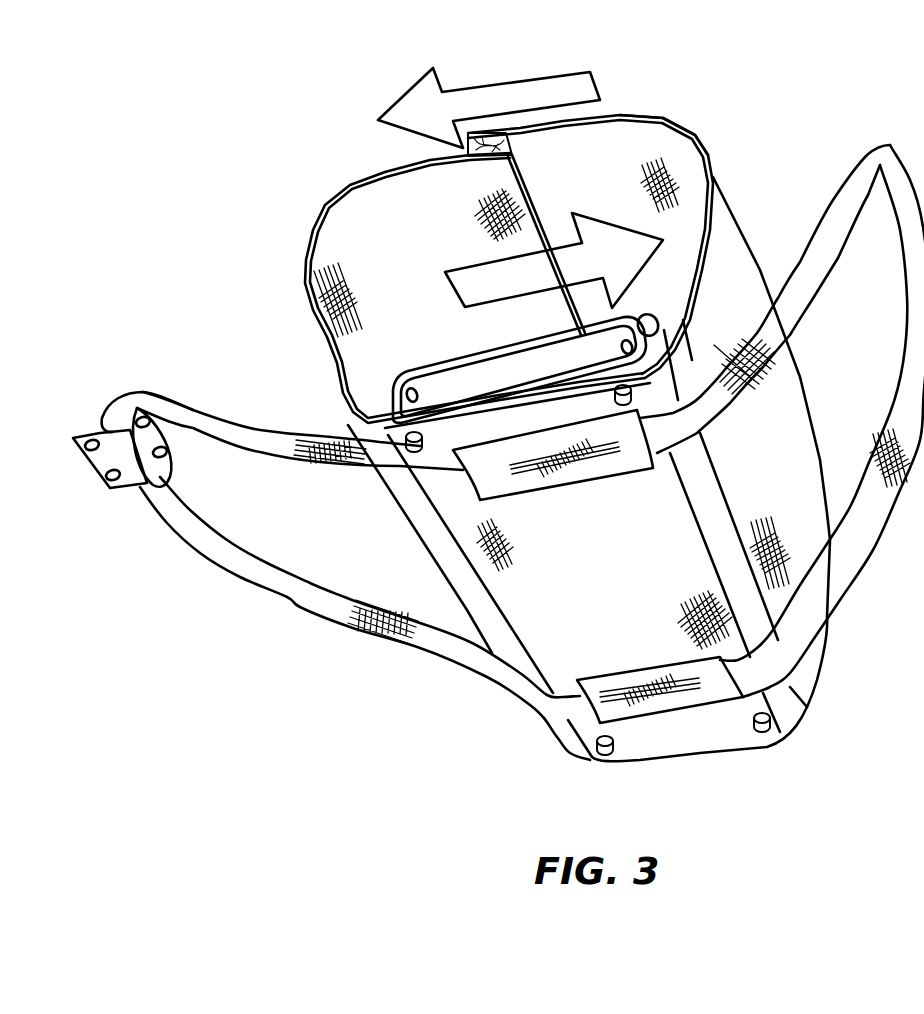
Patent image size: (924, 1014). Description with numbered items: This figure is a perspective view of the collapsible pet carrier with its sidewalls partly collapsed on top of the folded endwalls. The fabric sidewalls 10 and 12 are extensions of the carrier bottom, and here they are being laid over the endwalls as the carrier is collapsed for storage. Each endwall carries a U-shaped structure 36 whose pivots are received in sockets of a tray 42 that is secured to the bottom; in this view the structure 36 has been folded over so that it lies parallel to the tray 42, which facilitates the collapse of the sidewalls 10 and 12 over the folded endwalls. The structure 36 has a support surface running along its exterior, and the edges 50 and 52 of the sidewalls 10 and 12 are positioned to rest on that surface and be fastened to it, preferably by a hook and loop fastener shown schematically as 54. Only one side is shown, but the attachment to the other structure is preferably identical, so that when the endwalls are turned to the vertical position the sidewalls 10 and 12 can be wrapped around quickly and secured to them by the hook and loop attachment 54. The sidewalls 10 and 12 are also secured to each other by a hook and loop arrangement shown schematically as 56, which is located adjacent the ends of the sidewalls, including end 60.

The sidewall 10 is at (410, 248).
The sidewall 12 is at (615, 189).
The U-shaped structure 36 is at (658, 328).
The tray 42 is at (500, 378).
The edge of sidewall 50 is at (313, 228).
The edge of sidewall 52 is at (660, 120).
The hook and loop fastener 54 is at (385, 185).
The hook and loop arrangement 56 is at (490, 150).
The end of sidewall 60 is at (402, 97).